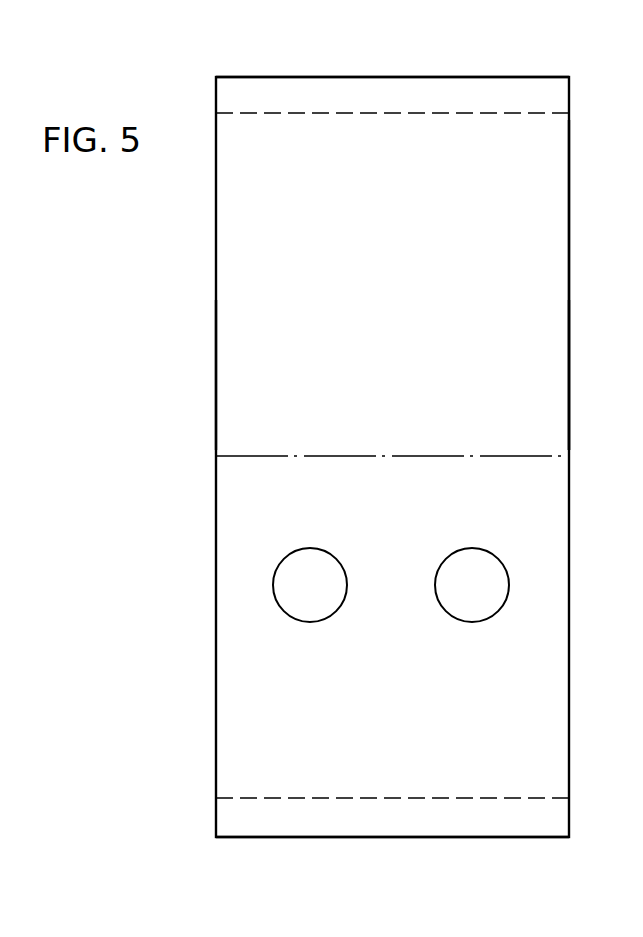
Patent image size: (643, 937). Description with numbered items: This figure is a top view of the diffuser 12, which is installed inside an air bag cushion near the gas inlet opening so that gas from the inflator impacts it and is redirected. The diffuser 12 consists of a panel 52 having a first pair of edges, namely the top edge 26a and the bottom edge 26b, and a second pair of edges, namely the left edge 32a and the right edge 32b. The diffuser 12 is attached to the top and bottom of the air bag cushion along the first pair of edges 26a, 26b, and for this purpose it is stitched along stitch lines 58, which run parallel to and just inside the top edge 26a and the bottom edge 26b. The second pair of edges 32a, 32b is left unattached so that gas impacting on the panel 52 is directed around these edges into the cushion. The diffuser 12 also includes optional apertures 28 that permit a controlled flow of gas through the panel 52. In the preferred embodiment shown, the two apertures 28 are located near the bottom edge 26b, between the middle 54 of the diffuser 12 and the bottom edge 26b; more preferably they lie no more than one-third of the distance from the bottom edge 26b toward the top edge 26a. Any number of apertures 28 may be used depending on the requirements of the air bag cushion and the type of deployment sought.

The diffuser 12 is at (215, 216).
The top edge 26a is at (423, 76).
The bottom edge 26b is at (318, 838).
The apertures 28 is at (320, 560).
The left edge 32a is at (216, 390).
The right edge 32b is at (569, 377).
The panel 52 is at (558, 270).
The middle 54 is at (545, 455).
The stitch lines 58 is at (552, 120).